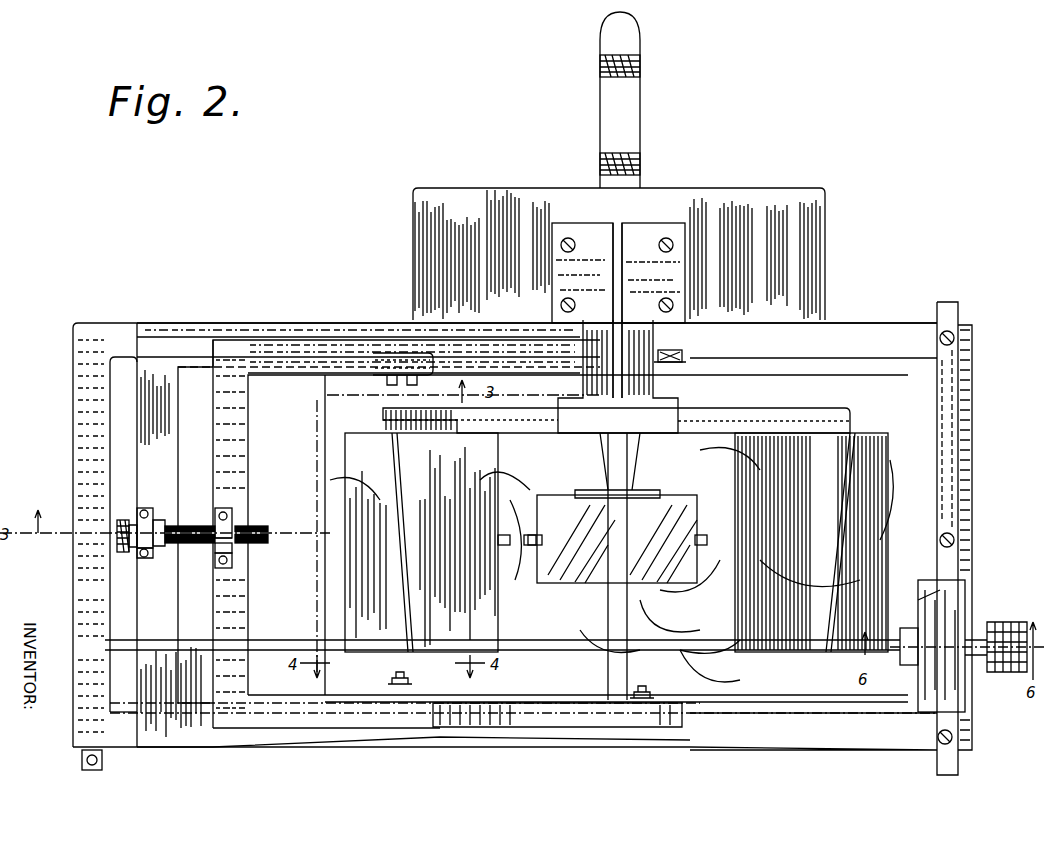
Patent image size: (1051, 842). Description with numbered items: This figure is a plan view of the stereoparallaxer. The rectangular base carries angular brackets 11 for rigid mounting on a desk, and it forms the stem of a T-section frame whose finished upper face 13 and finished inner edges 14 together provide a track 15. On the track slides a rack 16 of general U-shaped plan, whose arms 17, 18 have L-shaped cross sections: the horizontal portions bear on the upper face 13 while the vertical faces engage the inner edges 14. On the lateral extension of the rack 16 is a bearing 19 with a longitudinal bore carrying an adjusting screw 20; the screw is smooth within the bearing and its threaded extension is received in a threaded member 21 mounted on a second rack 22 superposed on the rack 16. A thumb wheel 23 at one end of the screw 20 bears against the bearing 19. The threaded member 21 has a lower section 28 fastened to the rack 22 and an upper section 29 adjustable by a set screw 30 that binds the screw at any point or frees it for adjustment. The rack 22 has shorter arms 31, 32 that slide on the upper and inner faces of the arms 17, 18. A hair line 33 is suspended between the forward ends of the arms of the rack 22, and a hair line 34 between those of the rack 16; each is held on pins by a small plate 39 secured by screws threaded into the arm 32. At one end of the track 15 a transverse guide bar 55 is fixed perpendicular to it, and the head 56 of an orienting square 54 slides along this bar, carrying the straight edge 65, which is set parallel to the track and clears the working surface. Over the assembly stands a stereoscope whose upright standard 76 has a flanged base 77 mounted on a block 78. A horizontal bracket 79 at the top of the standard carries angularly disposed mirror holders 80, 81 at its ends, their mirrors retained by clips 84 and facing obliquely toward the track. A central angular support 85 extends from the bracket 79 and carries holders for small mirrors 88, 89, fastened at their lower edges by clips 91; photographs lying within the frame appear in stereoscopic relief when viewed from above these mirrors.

The angular brackets 11 is at (102, 767).
The upper face 13 is at (122, 338).
The inner edges 14 is at (113, 358).
The track 15 is at (92, 591).
The rack 16 is at (171, 376).
The arm 17 is at (480, 350).
The arm 18 is at (520, 715).
The bearing 19 is at (145, 527).
The adjusting screw 20 is at (190, 527).
The threaded member 21 is at (230, 517).
The second rack 22 is at (235, 385).
The thumb wheel 23 is at (120, 530).
The lower section 28 is at (232, 564).
The upper section 29 is at (228, 530).
The set screw 30 is at (235, 550).
The arm 31 is at (355, 720).
The arm 32 is at (350, 352).
The hair line 33 is at (413, 686).
The hair line 34 is at (668, 699).
The small plate 39 is at (400, 353).
The orienting square 54 is at (953, 587).
The transverse guide bar 55 is at (950, 395).
The head 56 is at (955, 612).
The orienting square straight edge 65 is at (700, 693).
The upright standard 76 is at (640, 330).
The flanged base 77 is at (665, 240).
The block 78 is at (755, 203).
The horizontal bracket 79 is at (770, 415).
The mirror holder 80 is at (360, 462).
The mirror holder 81 is at (870, 470).
The clips 84 is at (503, 545).
The central angular support 85 is at (640, 438).
The small mirror 88 is at (580, 583).
The small mirror 89 is at (672, 583).
The clips 91 is at (530, 546).